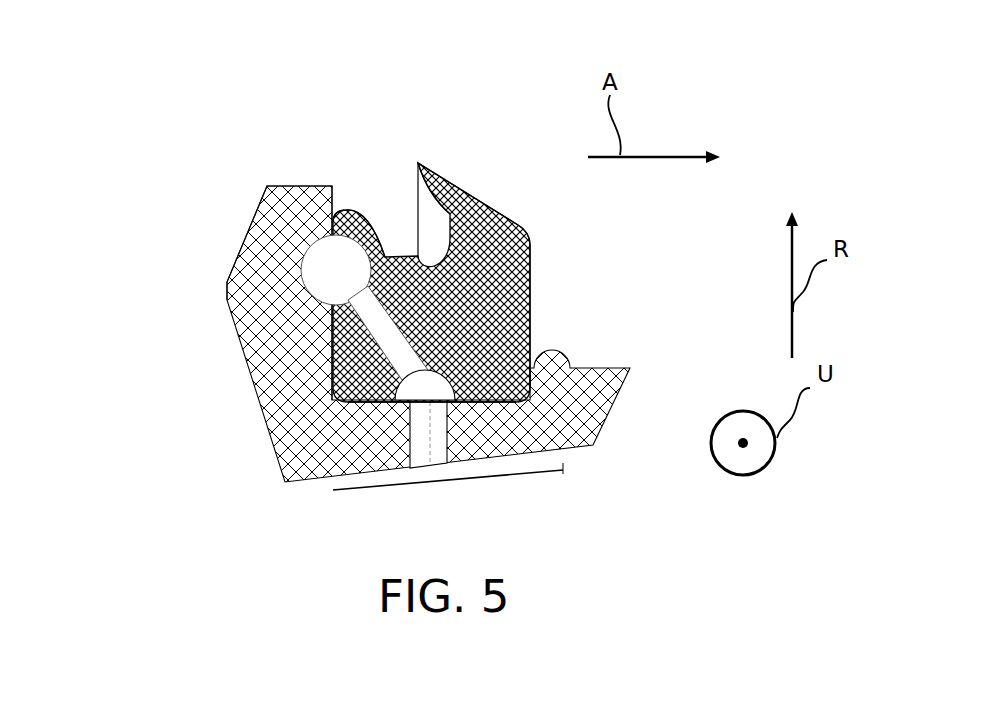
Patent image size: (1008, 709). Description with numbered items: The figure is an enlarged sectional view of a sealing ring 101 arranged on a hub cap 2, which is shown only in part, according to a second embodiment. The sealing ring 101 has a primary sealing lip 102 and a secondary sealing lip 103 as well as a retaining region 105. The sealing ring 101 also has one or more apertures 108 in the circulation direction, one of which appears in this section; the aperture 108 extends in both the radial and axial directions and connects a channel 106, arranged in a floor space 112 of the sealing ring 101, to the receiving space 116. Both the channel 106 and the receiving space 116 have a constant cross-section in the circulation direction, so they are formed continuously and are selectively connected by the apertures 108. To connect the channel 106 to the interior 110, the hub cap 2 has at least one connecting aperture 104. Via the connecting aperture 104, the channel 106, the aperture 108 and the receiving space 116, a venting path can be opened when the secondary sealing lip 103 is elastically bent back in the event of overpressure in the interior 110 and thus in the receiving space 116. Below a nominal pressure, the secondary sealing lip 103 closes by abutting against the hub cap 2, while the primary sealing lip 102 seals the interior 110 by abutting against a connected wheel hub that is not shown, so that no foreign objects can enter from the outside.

The hub cap 2 is at (310, 182).
The sealing ring 101 is at (554, 226).
The primary sealing lip 102 is at (432, 167).
The secondary sealing lip 103 is at (353, 222).
The connecting aperture 104 is at (413, 458).
The retaining region 105 is at (533, 287).
The channel 106 is at (448, 385).
The aperture 108 is at (368, 345).
The interior 110 is at (543, 511).
The floor space 112 is at (492, 405).
The receiving space 116 is at (348, 268).